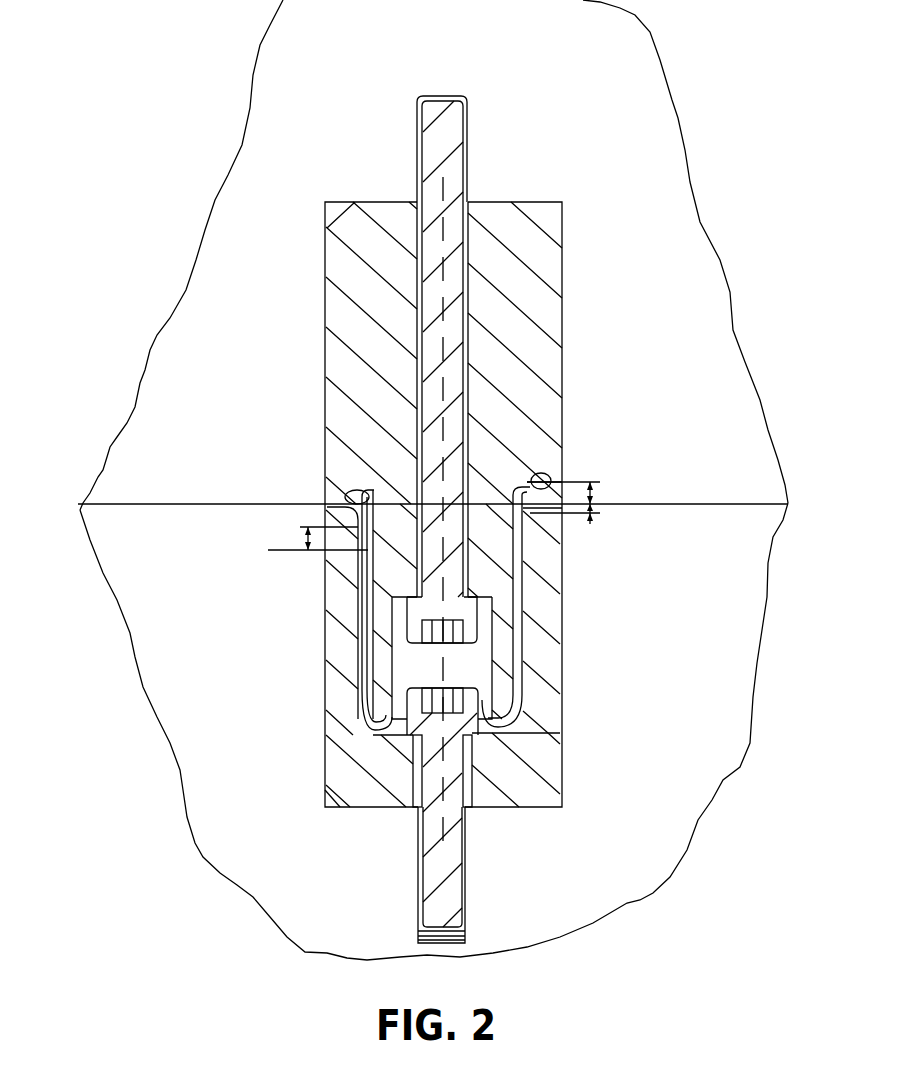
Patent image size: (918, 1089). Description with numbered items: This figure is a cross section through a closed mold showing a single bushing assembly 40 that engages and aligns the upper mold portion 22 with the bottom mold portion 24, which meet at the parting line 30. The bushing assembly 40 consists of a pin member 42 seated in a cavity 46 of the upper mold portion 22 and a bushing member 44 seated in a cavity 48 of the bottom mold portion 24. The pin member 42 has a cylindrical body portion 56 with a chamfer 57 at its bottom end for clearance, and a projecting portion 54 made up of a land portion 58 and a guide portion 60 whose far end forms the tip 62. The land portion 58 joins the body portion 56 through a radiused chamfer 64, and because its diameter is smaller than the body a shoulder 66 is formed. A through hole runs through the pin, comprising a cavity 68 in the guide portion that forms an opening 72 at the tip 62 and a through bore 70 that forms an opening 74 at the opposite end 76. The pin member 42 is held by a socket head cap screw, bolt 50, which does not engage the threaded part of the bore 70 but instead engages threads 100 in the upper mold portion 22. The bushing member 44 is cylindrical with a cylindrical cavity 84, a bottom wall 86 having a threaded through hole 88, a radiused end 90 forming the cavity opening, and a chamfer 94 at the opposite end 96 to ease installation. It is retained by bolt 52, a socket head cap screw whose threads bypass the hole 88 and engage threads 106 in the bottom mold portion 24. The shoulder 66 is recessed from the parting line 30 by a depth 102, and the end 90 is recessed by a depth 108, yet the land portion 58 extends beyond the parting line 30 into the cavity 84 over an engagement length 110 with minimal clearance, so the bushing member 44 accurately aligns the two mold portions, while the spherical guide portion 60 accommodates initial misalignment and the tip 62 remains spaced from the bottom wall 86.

The upper mold portion 22 is at (273, 53).
The bottom mold portion 24 is at (218, 848).
The parting line 30 is at (110, 504).
The bushing assembly 40 is at (216, 296).
The pin member 42 is at (345, 284).
The bushing member 44 is at (340, 669).
The cavity 46 is at (562, 208).
The cavity 48 is at (560, 787).
The bolt 50 is at (435, 358).
The bolt 52 is at (435, 863).
The projecting portion 54 is at (500, 633).
The body portion 56 is at (533, 348).
The chamfer 57 is at (322, 213).
The land portion 58 is at (372, 505).
The guide portion 60 is at (362, 615).
The tip 62 is at (388, 733).
The radiused chamfer 64 is at (368, 488).
The shoulder 66 is at (347, 490).
The cavity 68 is at (470, 662).
The through bore 70 is at (470, 262).
The opening 72 is at (527, 713).
The opening 74 is at (470, 200).
The opposite end 76 is at (372, 200).
The cylindrical cavity 84 is at (362, 698).
The bottom wall 86 is at (390, 793).
The threaded through hole 88 is at (478, 803).
The end 90 is at (340, 500).
The chamfer 94 is at (323, 805).
The opposite end 96 is at (517, 807).
The threads 100 is at (417, 180).
The depth 102 is at (600, 482).
The threads 106 is at (465, 897).
The depth 108 is at (600, 514).
The engagement length 110 is at (266, 545).